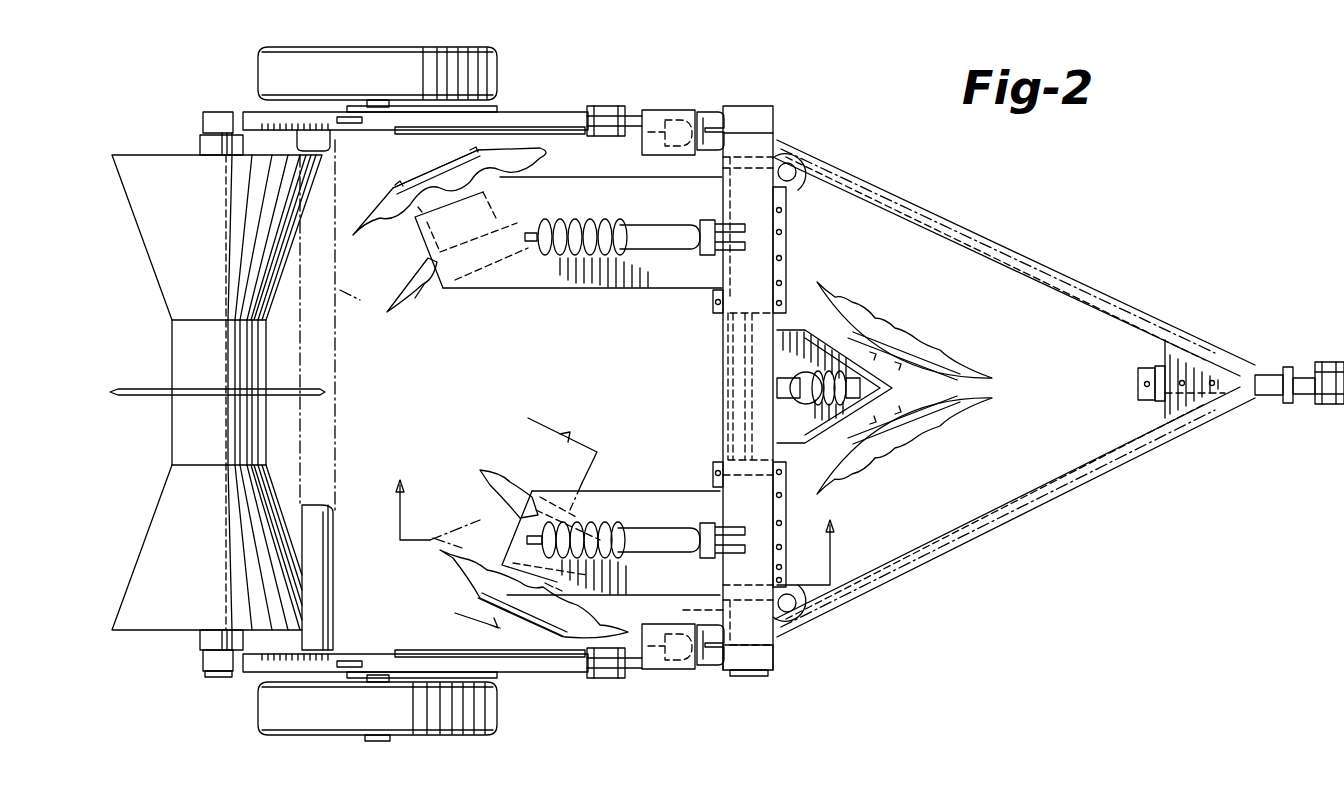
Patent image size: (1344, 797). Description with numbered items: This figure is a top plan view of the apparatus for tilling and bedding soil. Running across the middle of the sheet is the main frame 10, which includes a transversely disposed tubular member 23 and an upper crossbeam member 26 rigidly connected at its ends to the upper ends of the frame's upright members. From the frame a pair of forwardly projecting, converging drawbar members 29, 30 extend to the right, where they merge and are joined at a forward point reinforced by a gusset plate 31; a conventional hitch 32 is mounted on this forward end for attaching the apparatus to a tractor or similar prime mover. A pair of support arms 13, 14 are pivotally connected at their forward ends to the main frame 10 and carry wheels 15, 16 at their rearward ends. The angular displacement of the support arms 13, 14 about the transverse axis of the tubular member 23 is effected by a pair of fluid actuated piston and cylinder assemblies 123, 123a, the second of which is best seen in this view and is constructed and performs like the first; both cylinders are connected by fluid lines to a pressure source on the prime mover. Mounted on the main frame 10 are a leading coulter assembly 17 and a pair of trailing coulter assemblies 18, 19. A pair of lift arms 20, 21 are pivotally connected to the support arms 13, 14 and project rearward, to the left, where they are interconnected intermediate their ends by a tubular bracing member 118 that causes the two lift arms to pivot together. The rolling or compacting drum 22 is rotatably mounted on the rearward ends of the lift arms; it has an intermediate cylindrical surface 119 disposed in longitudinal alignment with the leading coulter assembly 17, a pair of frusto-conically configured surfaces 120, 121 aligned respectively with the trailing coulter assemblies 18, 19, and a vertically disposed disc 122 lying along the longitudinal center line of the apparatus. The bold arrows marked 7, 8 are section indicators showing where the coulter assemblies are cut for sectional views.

The main frame 10 is at (1083, 272).
The support arm 13 is at (662, 670).
The support arm 14 is at (635, 113).
The wheel 15 is at (428, 742).
The wheel 16 is at (405, 47).
The leading coulter assembly 17 is at (960, 357).
The trailing coulter assembly 18 is at (650, 486).
The trailing coulter assembly 19 is at (507, 297).
The lift arm 20 is at (535, 672).
The lift arm 21 is at (520, 113).
The rolling or compacting drum 22 is at (158, 449).
The transversely disposed tubular member 23 is at (780, 667).
The upper crossbeam member 26 is at (765, 268).
The drawbar member 29 is at (1005, 520).
The drawbar member 30 is at (945, 215).
The gusset plate 31 is at (1190, 380).
The hitch 32 is at (1308, 402).
The tubular bracing member 118 is at (330, 585).
The intermediate cylindrical surface 119 is at (188, 355).
The frusto-conically configured surface 120 is at (150, 560).
The frusto-conically configured surface 121 is at (168, 243).
The vertically disposed disc 122 is at (122, 400).
The fluid actuated piston and cylinder assembly 123 is at (715, 667).
The fluid actuated piston and cylinder assembly 123a is at (705, 125).
The section line 7 is at (607, 532).
The section line 8 is at (468, 466).